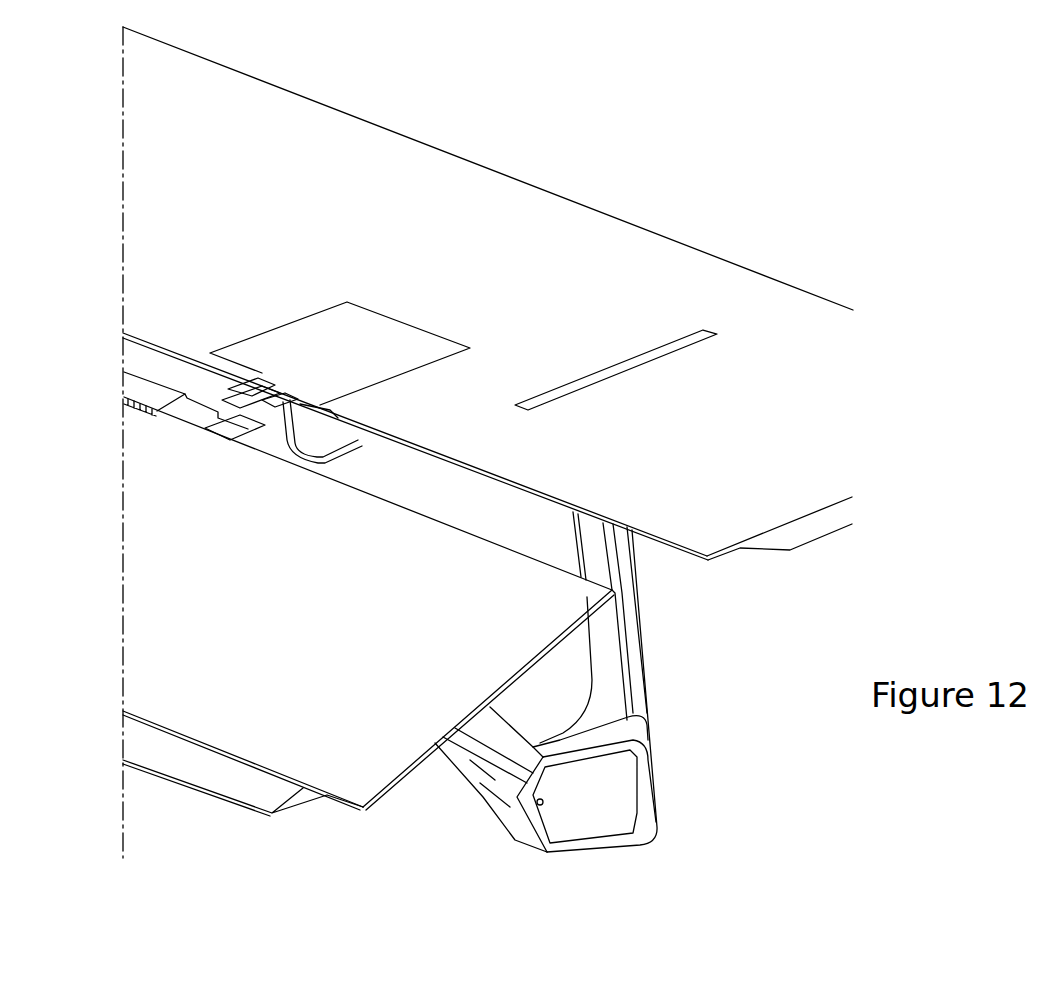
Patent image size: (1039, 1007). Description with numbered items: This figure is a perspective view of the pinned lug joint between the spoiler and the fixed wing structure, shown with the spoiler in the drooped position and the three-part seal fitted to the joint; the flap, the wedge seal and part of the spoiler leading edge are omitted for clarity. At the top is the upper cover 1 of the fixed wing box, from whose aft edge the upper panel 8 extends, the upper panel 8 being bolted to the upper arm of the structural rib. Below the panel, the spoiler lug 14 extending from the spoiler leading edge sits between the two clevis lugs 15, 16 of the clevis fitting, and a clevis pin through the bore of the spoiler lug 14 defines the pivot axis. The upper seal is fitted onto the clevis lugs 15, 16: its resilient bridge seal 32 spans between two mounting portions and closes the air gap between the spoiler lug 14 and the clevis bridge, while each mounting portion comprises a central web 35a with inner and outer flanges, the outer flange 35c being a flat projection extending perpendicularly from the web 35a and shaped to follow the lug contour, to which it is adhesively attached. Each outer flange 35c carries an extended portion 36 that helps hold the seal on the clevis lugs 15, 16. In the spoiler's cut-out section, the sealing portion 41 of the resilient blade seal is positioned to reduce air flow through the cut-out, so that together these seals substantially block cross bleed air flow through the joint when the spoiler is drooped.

The upper cover 1 is at (530, 230).
The upper panel 8 is at (308, 342).
The spoiler lug 14 is at (228, 400).
The clevis lug 15 is at (258, 433).
The clevis lug 16 is at (235, 390).
The bridge seal 32 is at (253, 410).
The central web 35a is at (227, 427).
The outer flange 35c is at (262, 412).
The extended portion 36 is at (283, 417).
The sealing portion 41 is at (188, 417).